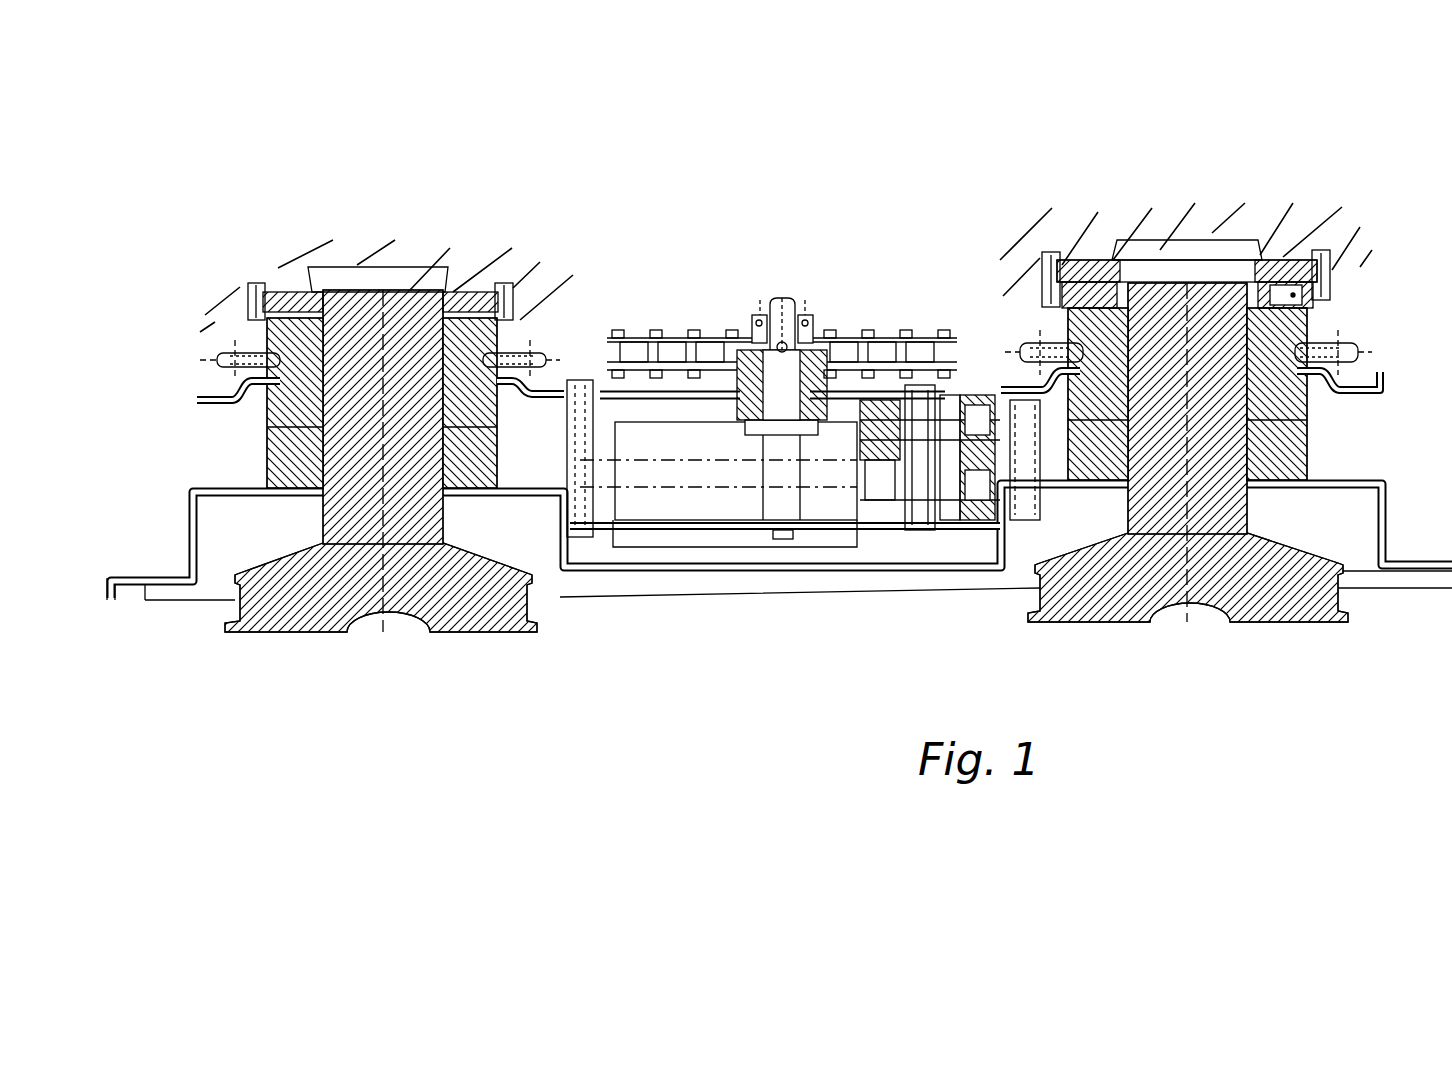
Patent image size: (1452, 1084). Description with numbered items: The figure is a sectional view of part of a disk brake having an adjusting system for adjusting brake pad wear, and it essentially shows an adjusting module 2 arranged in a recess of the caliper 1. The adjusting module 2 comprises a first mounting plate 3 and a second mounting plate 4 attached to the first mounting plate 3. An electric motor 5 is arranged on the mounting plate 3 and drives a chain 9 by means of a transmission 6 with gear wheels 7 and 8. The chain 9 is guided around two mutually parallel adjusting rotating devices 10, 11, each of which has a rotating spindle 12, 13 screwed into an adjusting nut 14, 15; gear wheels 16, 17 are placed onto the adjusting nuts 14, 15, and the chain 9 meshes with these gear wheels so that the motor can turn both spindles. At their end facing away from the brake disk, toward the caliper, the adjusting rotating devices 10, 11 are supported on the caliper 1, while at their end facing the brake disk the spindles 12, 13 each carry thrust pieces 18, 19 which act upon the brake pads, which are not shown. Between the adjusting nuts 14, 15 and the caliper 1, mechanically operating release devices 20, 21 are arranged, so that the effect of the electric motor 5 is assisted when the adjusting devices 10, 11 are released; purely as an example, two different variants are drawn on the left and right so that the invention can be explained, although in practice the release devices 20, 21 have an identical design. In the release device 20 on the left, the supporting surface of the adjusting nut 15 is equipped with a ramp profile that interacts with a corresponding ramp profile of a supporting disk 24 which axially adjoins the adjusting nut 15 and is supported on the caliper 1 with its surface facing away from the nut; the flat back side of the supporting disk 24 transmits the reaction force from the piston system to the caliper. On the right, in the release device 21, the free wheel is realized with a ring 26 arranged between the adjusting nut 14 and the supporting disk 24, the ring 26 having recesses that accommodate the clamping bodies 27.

The caliper 1 is at (498, 278).
The adjusting module 2 is at (768, 606).
The first mounting plate 3 is at (875, 573).
The second mounting plate 4 is at (1375, 397).
The electric motor 5 is at (652, 540).
The transmission 6 is at (980, 378).
The gear wheel 7 is at (923, 387).
The gear wheel 8 is at (737, 353).
The chain 9 is at (852, 343).
The adjusting rotating device 10 is at (1248, 185).
The adjusting rotating device 11 is at (407, 238).
The rotating spindle 12 is at (1150, 290).
The rotating spindle 13 is at (348, 320).
The adjusting nut 14 is at (1275, 322).
The adjusting nut 15 is at (287, 340).
The gear wheel 16 is at (1328, 327).
The gear wheel 17 is at (247, 378).
The thrust piece 18 is at (1272, 595).
The thrust piece 19 is at (460, 600).
The release device 20 is at (272, 270).
The release device 21 is at (1103, 256).
The supporting disk 24 is at (287, 297).
The ring 26 is at (1072, 290).
The clamping body 27 is at (1300, 293).